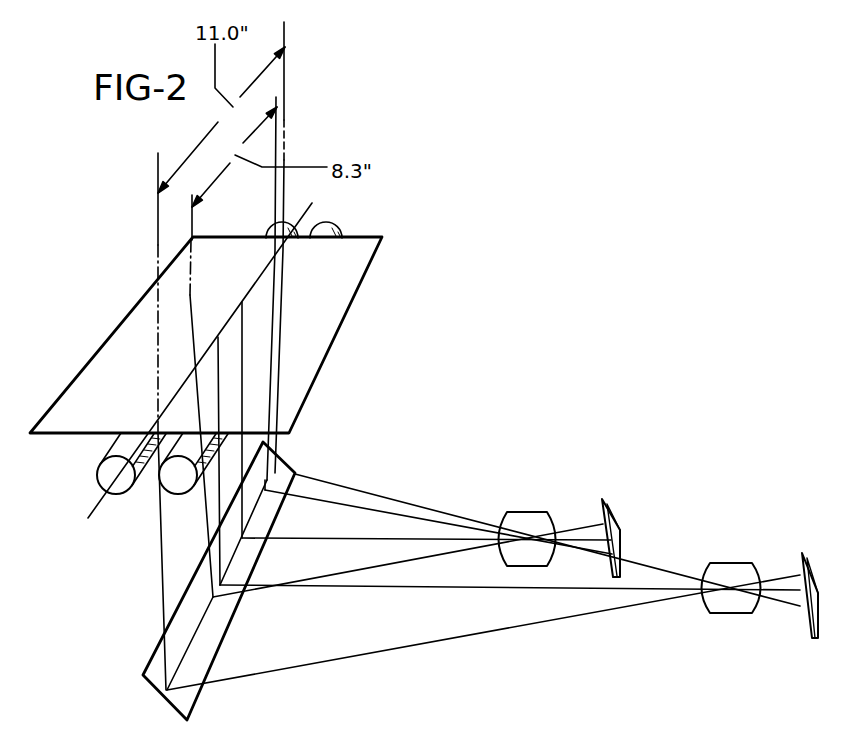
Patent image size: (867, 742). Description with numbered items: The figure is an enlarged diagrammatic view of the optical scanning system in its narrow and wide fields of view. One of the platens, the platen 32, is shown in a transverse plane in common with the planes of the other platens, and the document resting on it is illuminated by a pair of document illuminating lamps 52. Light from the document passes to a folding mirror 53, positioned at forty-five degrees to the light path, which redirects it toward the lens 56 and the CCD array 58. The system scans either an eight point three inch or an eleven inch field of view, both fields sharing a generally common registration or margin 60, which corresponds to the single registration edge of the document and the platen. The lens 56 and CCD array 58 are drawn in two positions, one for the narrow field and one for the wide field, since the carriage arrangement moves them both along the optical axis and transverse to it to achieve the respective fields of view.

The platen 32 is at (358, 275).
The document illuminating lamps 52 is at (168, 479).
The folding mirror 53 is at (215, 620).
The lens 56 is at (528, 525).
The CCD array 58 is at (612, 520).
The registration or margin 60 is at (286, 118).